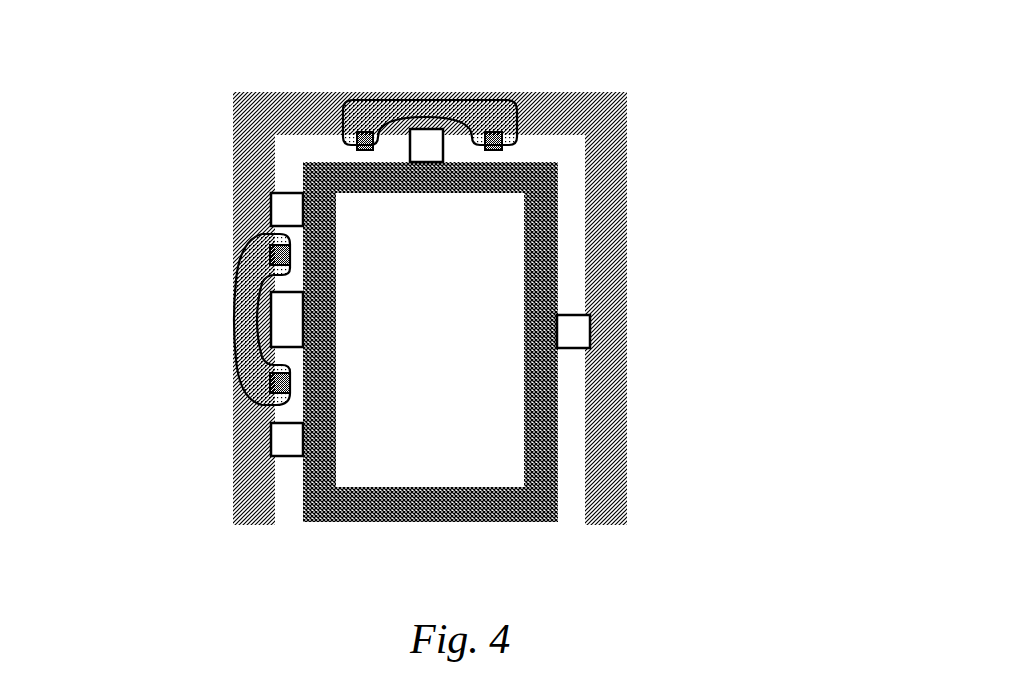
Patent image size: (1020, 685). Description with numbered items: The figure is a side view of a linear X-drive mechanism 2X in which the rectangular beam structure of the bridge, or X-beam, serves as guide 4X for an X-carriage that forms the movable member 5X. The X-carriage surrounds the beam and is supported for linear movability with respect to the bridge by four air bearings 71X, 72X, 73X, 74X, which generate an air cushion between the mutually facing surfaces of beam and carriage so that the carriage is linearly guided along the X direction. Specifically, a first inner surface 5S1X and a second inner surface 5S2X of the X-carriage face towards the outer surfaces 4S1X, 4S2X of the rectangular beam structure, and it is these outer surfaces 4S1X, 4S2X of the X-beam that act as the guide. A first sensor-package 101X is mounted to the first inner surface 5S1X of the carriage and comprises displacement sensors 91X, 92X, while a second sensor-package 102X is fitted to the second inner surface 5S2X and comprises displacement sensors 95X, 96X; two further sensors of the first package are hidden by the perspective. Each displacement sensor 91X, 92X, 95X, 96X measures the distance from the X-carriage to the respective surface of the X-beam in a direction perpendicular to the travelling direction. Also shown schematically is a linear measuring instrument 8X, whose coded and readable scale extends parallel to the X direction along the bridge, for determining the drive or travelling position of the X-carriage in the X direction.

The linear X-drive mechanism 2X is at (594, 28).
The guide 4X is at (522, 500).
The movable member 5X is at (607, 435).
The outer surface 4S1X is at (297, 175).
The outer surface 4S2X is at (549, 154).
The first inner surface 5S1X is at (280, 507).
The second inner surface 5S2X is at (527, 138).
The air bearing 71X is at (277, 442).
The air bearing 72X is at (282, 207).
The air bearing 73X is at (411, 130).
The air bearing 74X is at (572, 322).
The linear measuring instrument 8X is at (287, 313).
The displacement sensor 91X is at (278, 255).
The displacement sensor 92X is at (280, 383).
The displacement sensor 95X is at (364, 132).
The displacement sensor 96X is at (497, 132).
The first sensor-package 101X is at (247, 338).
The second sensor-package 102X is at (437, 103).